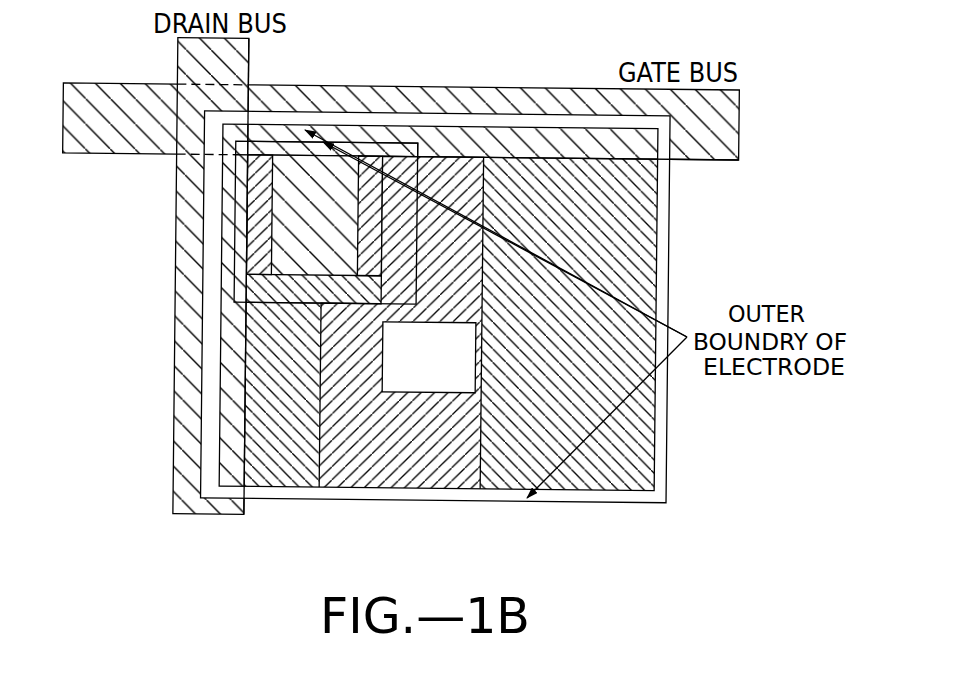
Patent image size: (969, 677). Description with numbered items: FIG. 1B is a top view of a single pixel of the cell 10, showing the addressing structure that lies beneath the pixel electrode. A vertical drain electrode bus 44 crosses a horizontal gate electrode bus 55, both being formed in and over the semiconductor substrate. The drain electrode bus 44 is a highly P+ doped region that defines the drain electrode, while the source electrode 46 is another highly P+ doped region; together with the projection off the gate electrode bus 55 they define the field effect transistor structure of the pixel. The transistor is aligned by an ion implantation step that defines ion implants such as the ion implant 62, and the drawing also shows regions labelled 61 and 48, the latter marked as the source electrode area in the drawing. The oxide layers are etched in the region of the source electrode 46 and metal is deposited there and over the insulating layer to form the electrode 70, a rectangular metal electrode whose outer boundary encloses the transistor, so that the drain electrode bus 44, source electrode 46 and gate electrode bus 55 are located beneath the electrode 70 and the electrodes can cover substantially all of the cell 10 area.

The cell 10 is at (395, 315).
The drain electrode bus 44 is at (178, 357).
The source electrode 46 is at (432, 295).
The source electrode 48 is at (326, 489).
The gate electrode bus 55 is at (287, 197).
The drain contact region 61 is at (250, 229).
The ion implant 62 is at (360, 246).
The electrode 70 is at (262, 420).